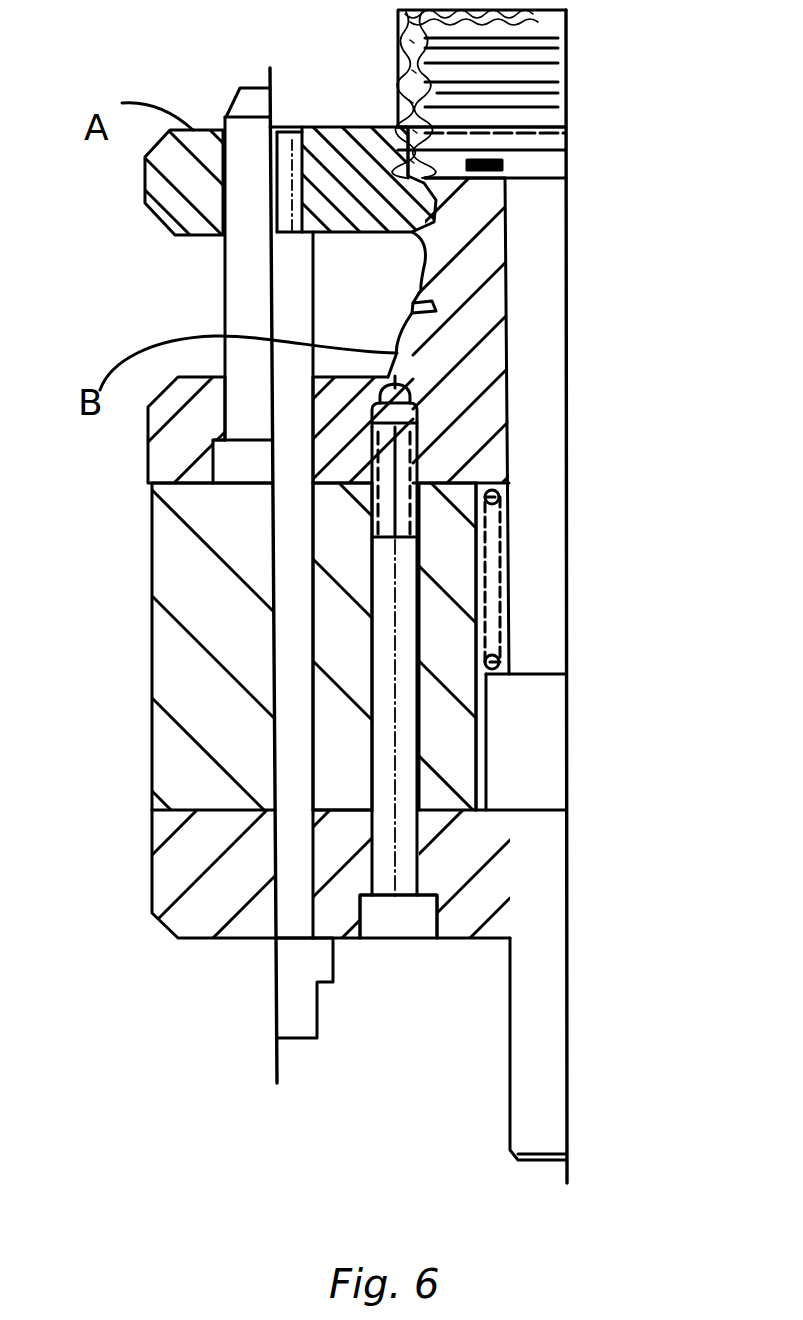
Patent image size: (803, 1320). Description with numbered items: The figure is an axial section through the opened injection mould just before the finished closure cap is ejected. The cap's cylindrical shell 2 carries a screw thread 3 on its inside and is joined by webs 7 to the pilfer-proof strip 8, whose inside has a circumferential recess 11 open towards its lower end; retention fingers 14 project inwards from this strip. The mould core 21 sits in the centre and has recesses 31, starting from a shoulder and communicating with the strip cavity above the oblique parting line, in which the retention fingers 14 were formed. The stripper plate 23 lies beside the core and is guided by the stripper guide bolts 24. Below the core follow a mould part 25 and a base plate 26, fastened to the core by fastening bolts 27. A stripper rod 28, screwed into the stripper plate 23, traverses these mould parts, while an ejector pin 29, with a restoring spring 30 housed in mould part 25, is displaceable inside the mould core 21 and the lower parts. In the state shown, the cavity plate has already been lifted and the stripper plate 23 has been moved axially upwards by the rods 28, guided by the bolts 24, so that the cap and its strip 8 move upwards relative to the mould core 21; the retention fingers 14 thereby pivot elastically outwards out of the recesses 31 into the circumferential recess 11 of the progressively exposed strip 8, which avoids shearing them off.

The shell 2 is at (398, 50).
The screw thread 3 is at (552, 90).
The webs 7 is at (540, 122).
The pilfer-proof strip 8 is at (395, 150).
The circumferential recess 11 is at (392, 235).
The retention fingers 14 is at (445, 158).
The mould core 21 is at (483, 350).
The stripper plate 23 is at (160, 185).
The stripper guide bolts 24 is at (235, 292).
The mould part 25 is at (170, 676).
The base plate 26 is at (168, 865).
The fastening bolts 27 is at (420, 842).
The stripper rod 28 is at (288, 903).
The ejector pin 29 is at (545, 625).
The restoring spring 30 is at (497, 540).
The recesses 31 is at (478, 282).